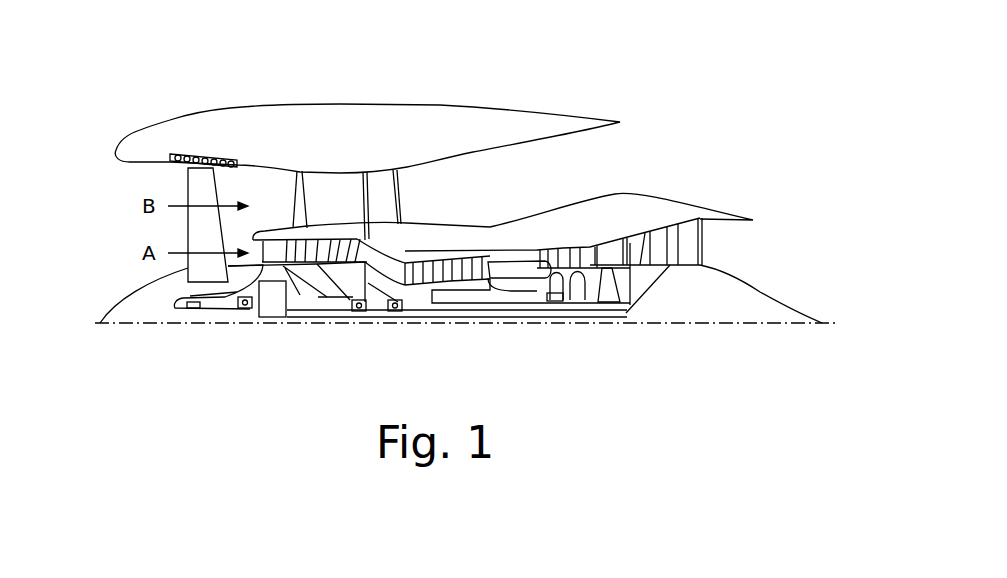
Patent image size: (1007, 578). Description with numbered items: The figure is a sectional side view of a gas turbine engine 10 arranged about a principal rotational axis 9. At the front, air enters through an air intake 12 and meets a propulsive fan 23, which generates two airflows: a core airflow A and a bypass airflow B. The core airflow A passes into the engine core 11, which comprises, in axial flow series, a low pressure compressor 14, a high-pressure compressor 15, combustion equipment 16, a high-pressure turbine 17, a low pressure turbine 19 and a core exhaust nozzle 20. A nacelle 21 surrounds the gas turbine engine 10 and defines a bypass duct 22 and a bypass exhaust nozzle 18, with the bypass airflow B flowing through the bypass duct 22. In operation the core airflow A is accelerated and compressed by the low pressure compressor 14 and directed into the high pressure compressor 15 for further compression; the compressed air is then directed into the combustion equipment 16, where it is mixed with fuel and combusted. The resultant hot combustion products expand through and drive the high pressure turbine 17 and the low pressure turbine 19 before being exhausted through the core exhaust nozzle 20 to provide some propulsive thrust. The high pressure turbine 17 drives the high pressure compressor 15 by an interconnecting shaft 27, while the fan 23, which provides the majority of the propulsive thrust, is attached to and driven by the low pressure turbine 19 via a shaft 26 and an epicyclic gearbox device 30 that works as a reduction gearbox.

The principal rotational axis 9 is at (723, 326).
The gas turbine engine 10 is at (163, 119).
The core 11 is at (523, 238).
The air intake 12 is at (120, 179).
The low pressure compressor 14 is at (328, 250).
The high-pressure compressor 15 is at (450, 273).
The combustion equipment 16 is at (512, 275).
The high-pressure turbine 17 is at (567, 268).
The bypass exhaust nozzle 18 is at (712, 119).
The low pressure turbine 19 is at (678, 255).
The core exhaust nozzle 20 is at (762, 254).
The nacelle 21 is at (377, 117).
The bypass duct 22 is at (598, 160).
The propulsive fan 23 is at (193, 240).
The shaft 26 is at (420, 318).
The interconnecting shaft 27 is at (473, 313).
The epicyclic gearbox device 30 is at (272, 318).